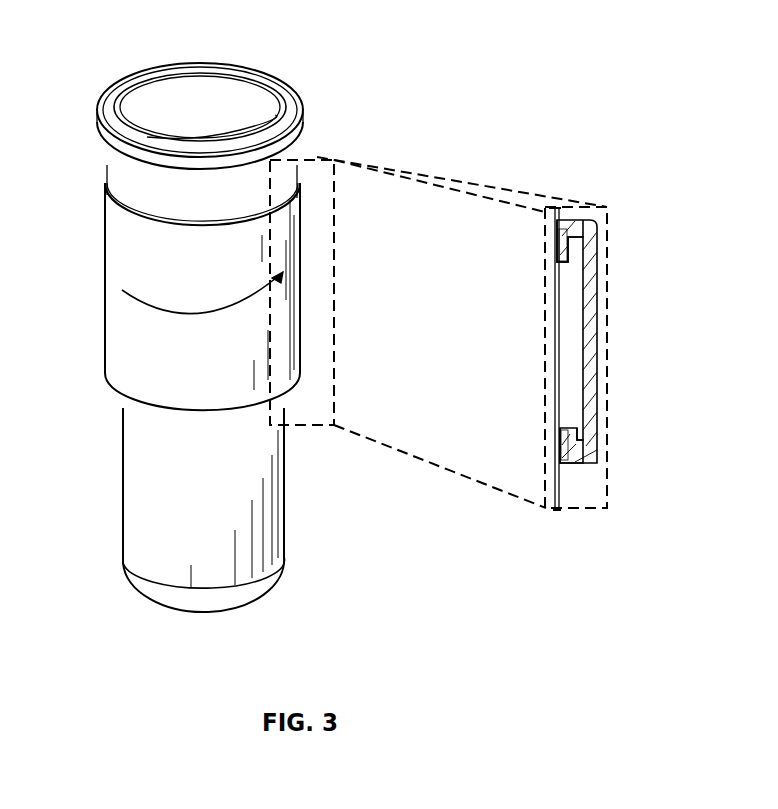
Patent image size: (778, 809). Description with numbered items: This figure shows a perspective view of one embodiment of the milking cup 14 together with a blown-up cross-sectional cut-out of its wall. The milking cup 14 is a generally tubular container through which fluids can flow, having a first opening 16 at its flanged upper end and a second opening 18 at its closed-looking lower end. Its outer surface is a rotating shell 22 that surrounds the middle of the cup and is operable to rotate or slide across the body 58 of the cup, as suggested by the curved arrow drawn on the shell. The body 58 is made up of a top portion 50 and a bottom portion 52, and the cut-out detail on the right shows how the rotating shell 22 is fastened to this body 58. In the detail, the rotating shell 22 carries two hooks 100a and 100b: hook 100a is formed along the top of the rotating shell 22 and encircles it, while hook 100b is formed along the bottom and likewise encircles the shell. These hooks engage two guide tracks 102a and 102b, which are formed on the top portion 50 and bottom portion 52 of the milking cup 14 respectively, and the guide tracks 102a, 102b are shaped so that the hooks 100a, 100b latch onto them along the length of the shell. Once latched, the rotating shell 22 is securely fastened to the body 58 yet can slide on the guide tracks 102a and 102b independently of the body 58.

The milking cup 14 is at (268, 505).
The first opening 16 is at (178, 98).
The second opening 18 is at (238, 607).
The rotating shell 22 is at (113, 268).
The top portion 50 is at (288, 150).
The bottom portion 52 is at (137, 530).
The body 58 is at (118, 173).
The hook 100a is at (578, 221).
The hook 100b is at (568, 450).
The guide track 102a is at (562, 265).
The guide track 102b is at (570, 423).